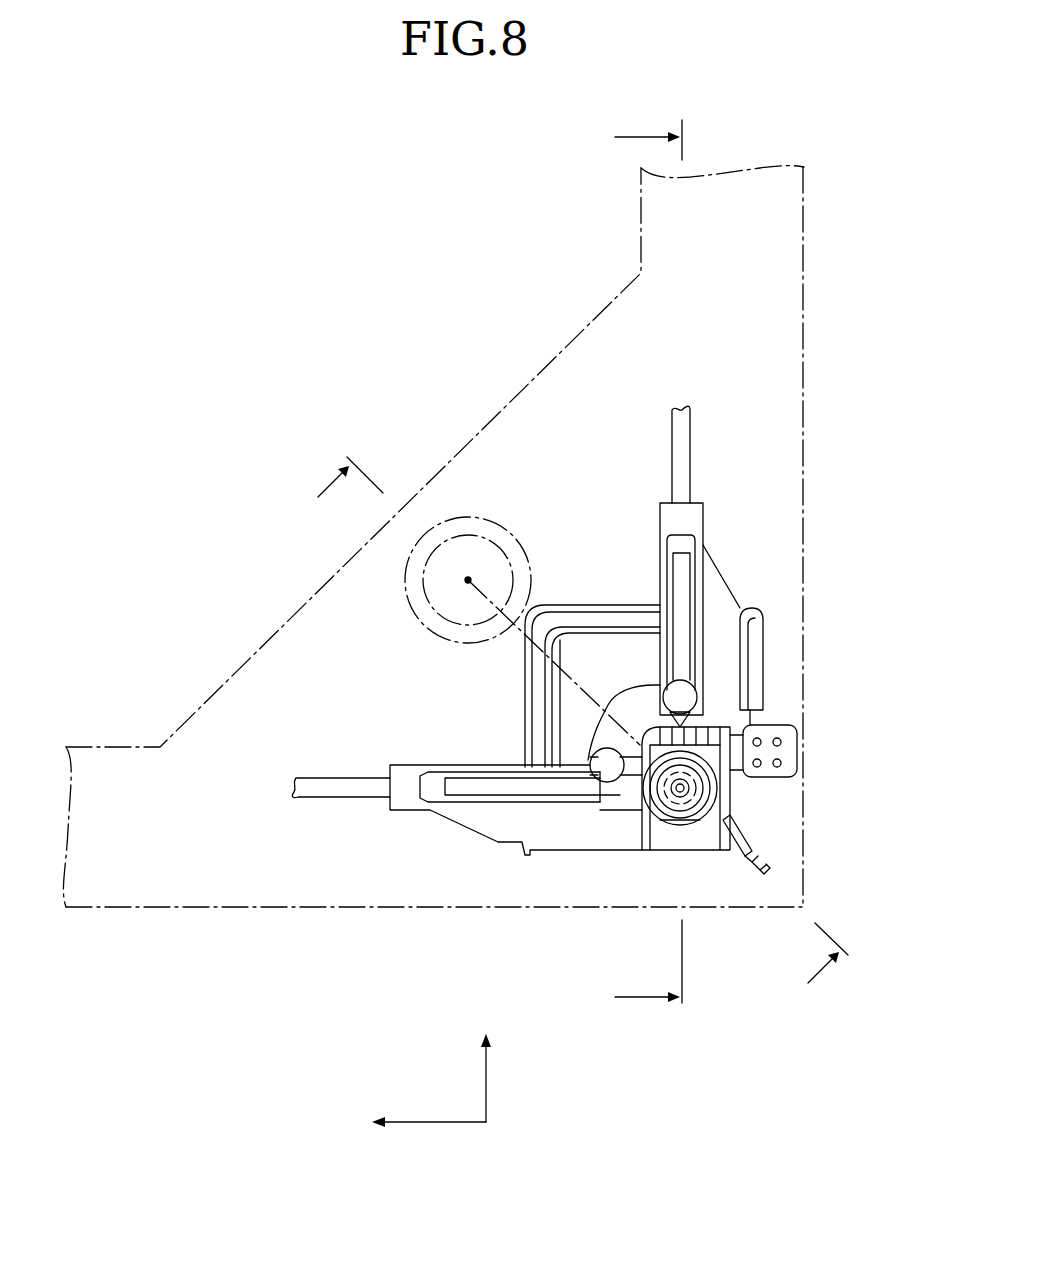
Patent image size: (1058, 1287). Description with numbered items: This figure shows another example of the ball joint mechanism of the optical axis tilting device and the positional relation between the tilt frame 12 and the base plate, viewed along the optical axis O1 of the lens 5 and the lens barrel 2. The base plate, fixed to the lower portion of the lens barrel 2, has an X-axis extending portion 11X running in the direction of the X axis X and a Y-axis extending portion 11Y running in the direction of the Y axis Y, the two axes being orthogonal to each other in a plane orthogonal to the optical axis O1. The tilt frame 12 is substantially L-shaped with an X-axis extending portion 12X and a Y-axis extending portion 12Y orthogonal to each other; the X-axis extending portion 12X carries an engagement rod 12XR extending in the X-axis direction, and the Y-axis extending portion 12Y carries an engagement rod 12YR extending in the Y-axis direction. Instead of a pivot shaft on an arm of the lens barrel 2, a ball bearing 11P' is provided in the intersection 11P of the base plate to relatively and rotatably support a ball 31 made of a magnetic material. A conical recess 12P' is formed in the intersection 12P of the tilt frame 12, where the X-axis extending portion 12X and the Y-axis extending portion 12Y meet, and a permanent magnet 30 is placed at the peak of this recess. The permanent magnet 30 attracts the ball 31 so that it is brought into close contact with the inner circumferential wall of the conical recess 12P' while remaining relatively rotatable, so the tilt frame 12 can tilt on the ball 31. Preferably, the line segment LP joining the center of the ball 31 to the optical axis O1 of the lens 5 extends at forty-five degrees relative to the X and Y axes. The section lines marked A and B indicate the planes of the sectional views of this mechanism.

The optical axis O1 is at (470, 578).
The lens 5 is at (463, 552).
The lens barrel 2 is at (408, 572).
The tilt frame 12 is at (588, 736).
The line segment LP is at (588, 692).
The Y-axis extending portion 11Y is at (805, 441).
The engagement rod 12YR is at (690, 467).
The Y-axis extending portion 12Y is at (693, 522).
The permanent magnet 30 is at (713, 752).
The ball 31 is at (690, 786).
The intersection 12P is at (775, 817).
The engagement rod 12XR is at (315, 790).
The X-axis extending portion 12X is at (400, 790).
The X-axis extending portion 11X is at (487, 905).
The conical recess 12P' is at (599, 902).
The intersection 11P is at (638, 923).
The ball bearing 11P' is at (713, 886).
The section line A is at (633, 566).
The section line B is at (570, 735).
The X-axis X is at (416, 1123).
The Y-axis Y is at (486, 1062).